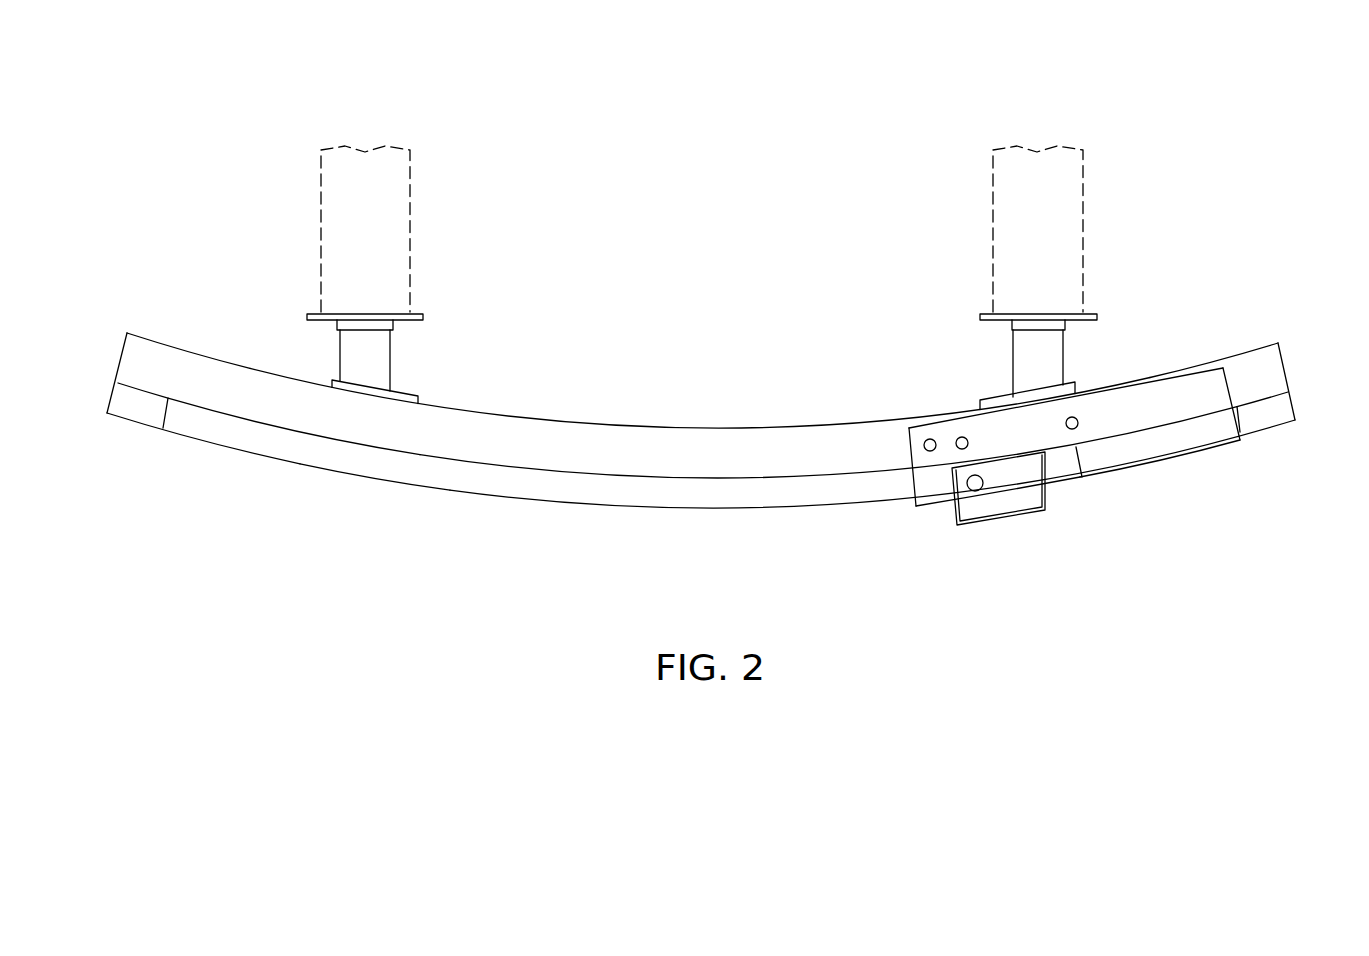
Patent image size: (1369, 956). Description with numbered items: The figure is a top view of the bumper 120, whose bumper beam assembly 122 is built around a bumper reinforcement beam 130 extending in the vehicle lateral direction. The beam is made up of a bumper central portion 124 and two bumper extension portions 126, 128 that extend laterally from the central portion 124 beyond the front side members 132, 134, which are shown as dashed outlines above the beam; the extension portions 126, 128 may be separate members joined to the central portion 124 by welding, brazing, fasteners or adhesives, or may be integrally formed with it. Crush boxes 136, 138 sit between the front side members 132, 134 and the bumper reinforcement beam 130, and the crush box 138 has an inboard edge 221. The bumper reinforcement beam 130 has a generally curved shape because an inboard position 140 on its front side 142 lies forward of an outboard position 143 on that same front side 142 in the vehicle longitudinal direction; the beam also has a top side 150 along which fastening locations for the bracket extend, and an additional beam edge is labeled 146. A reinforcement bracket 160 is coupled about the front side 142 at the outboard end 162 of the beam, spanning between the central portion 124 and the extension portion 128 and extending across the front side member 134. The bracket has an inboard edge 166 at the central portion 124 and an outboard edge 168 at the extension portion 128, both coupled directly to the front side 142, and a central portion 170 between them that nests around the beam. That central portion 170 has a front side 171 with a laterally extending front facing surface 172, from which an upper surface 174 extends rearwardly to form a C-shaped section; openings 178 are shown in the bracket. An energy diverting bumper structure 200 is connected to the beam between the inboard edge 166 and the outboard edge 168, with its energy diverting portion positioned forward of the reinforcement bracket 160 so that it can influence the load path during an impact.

The bumper 120 is at (725, 327).
The bumper beam assembly 122 is at (725, 383).
The bumper central portion 124 is at (772, 389).
The bumper extension portion 126 is at (176, 302).
The bumper extension portion 128 is at (1219, 319).
The bumper reinforcement beam 130 is at (628, 458).
The front side member 132 is at (395, 190).
The front side member 134 is at (1000, 190).
The crush box 136 is at (375, 358).
The crush box 138 is at (1030, 352).
The inboard position 140 is at (715, 508).
The front side 142 is at (375, 520).
The outboard position 143 is at (353, 470).
The end cap of beam 146 is at (197, 437).
The top side 150 is at (820, 432).
The reinforcement bracket 160 is at (1080, 496).
The outboard end 162 is at (1313, 339).
The inboard edge 166 is at (915, 503).
The outboard edge 168 is at (1243, 438).
The central portion 170 is at (1024, 525).
The front side 171 is at (1160, 510).
The front facing surface 172 is at (1198, 455).
The upper surface 174 is at (1147, 458).
The fastener holes 178 is at (942, 437).
The energy diverting bumper structure 200 is at (985, 538).
The inboard edge 221 is at (1012, 372).